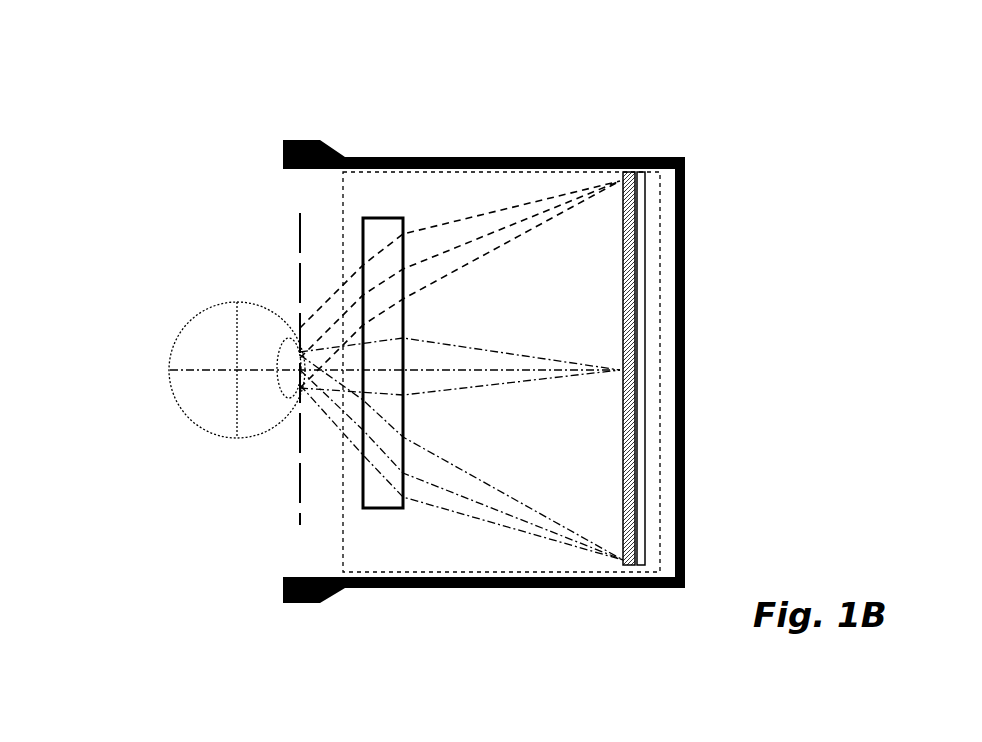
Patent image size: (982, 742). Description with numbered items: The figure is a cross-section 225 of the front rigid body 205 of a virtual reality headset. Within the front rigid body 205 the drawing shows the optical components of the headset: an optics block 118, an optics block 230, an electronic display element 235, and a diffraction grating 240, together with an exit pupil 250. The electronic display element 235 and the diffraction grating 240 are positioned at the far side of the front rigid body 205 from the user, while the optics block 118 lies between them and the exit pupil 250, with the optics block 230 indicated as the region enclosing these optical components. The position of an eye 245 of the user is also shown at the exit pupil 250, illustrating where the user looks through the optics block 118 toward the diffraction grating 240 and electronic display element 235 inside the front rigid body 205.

The cross-section 225 is at (64, 44).
The front rigid body 205 is at (652, 154).
The optics block 230 is at (338, 487).
The optics block 118 is at (356, 230).
The diffraction grating 240 is at (616, 238).
The electronic display element 235 is at (650, 285).
The eye 245 is at (201, 311).
The exit pupil 250 is at (290, 504).